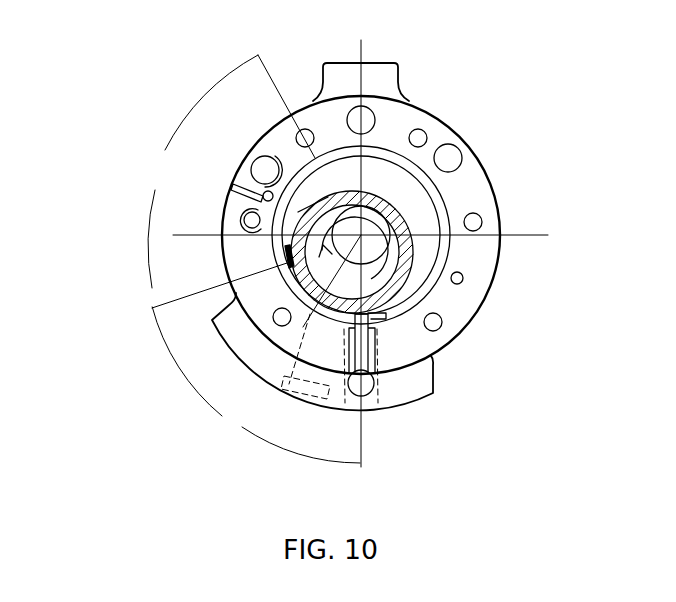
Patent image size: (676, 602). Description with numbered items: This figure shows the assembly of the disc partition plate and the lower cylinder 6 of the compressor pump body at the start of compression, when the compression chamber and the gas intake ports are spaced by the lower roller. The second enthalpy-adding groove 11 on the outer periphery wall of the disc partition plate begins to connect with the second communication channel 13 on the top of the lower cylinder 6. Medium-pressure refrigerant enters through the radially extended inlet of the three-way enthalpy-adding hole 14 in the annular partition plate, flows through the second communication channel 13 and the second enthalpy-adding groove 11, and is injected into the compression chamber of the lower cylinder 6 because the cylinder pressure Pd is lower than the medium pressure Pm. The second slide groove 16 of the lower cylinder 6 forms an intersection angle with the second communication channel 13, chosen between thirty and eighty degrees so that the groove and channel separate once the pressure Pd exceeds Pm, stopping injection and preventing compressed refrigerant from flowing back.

The lower cylinder 6 is at (323, 343).
The second enthalpy-adding groove 11 is at (283, 257).
The second communication channel 13 is at (290, 176).
The three-way enthalpy-adding hole 14 is at (232, 188).
The second slide groove 16 is at (375, 366).
The pressure in the cylinder Pd is at (377, 178).
The medium pressure Pm is at (245, 192).